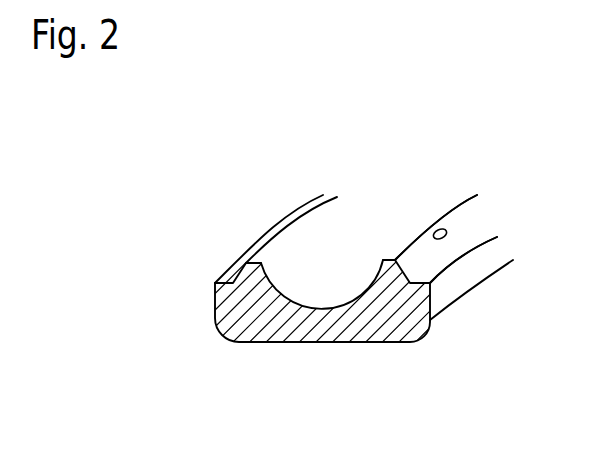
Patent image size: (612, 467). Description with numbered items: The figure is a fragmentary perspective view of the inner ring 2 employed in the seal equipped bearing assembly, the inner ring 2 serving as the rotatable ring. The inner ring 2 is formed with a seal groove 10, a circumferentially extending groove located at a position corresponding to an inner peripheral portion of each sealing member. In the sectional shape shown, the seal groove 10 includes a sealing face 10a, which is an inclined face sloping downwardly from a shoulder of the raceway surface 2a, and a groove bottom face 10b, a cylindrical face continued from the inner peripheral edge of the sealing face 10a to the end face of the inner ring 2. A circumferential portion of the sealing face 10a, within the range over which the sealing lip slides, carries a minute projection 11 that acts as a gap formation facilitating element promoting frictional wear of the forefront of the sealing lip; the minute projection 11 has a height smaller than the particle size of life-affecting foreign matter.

The inner ring 2 is at (315, 345).
The raceway surface 2a is at (322, 241).
The seal groove 10 is at (237, 262).
The sealing face 10a is at (415, 258).
The groove bottom face 10b is at (433, 272).
The minute projection 11 is at (456, 208).